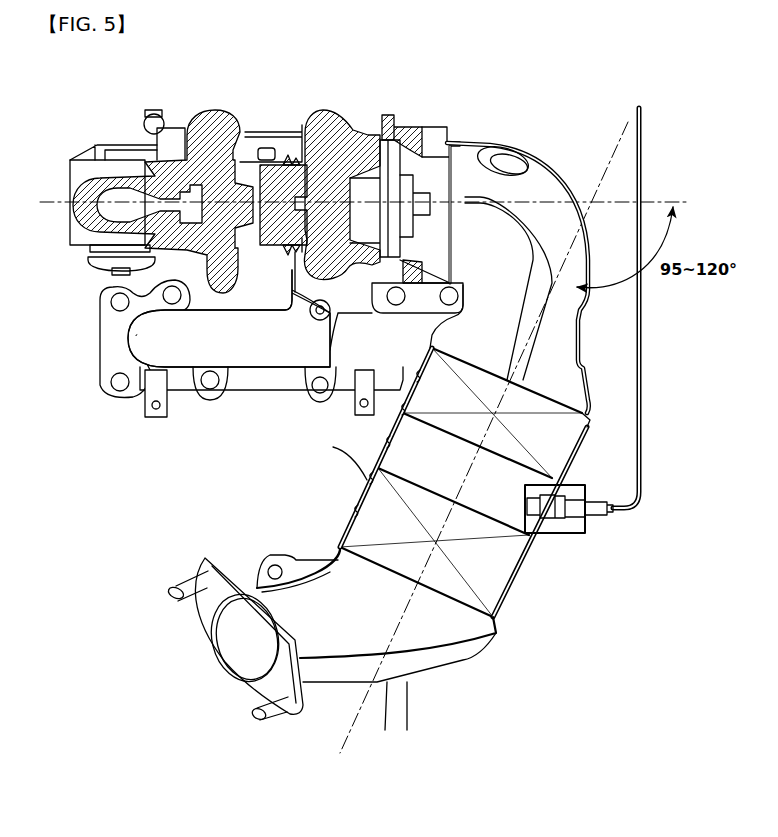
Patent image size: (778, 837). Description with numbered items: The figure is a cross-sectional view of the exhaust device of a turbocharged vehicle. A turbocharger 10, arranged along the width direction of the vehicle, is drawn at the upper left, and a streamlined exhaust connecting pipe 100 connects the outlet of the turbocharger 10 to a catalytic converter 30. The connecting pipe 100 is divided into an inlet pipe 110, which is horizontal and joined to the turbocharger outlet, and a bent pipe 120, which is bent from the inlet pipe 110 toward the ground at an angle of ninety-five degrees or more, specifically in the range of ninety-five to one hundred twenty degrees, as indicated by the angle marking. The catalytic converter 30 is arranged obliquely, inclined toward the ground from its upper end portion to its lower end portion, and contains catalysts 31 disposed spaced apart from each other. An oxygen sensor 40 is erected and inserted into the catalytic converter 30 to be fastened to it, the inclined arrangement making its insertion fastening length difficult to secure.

The turbocharger 10 is at (203, 125).
The streamlined exhaust connecting pipe 100 is at (559, 232).
The inlet pipe 110 is at (453, 138).
The bent pipe 120 is at (615, 232).
The catalytic converter 30 is at (378, 539).
The catalysts 31 is at (383, 437).
The oxygen sensor 40 is at (552, 514).